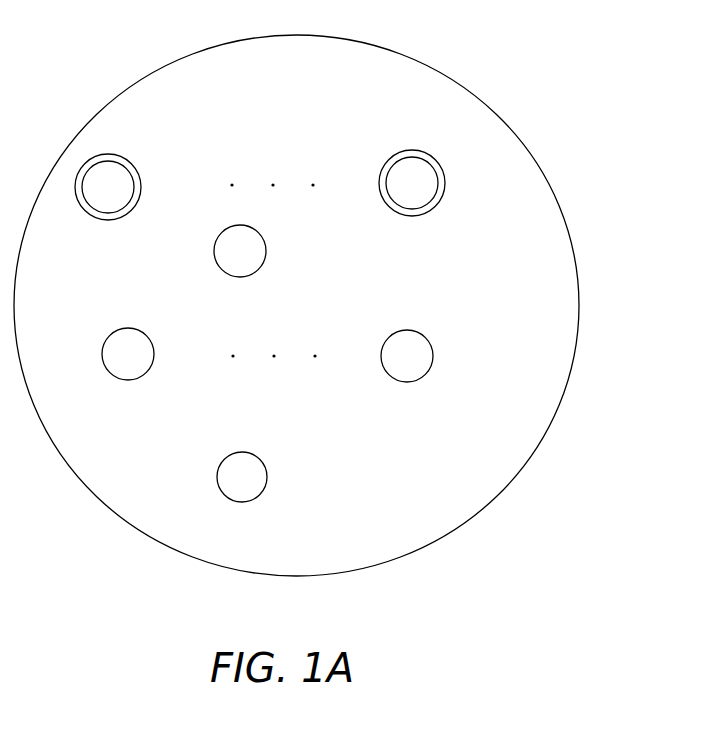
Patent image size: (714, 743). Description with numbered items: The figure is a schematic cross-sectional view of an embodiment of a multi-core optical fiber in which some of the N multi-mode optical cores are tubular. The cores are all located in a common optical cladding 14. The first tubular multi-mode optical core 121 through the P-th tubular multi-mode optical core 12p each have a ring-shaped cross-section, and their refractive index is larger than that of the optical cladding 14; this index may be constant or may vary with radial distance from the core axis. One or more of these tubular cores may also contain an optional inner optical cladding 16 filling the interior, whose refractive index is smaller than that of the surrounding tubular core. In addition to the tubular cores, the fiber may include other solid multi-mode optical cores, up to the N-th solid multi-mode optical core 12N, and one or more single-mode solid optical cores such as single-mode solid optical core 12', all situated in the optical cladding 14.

The optical cladding 14 is at (481, 458).
The inner optical cladding 16 is at (106, 196).
The tubular multi-mode optical core 121 is at (116, 156).
The tubular multi-mode optical core 12p is at (445, 183).
The single-mode solid optical core 12' is at (278, 473).
The solid multi-mode optical core 12N is at (433, 356).